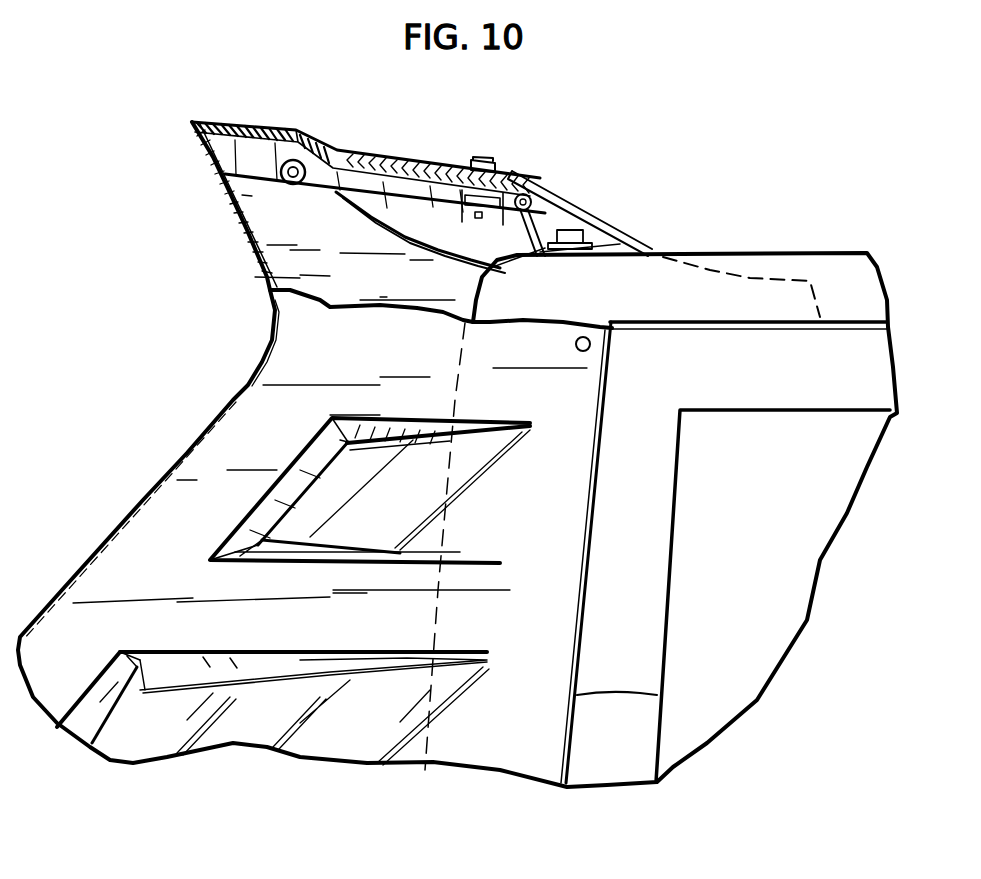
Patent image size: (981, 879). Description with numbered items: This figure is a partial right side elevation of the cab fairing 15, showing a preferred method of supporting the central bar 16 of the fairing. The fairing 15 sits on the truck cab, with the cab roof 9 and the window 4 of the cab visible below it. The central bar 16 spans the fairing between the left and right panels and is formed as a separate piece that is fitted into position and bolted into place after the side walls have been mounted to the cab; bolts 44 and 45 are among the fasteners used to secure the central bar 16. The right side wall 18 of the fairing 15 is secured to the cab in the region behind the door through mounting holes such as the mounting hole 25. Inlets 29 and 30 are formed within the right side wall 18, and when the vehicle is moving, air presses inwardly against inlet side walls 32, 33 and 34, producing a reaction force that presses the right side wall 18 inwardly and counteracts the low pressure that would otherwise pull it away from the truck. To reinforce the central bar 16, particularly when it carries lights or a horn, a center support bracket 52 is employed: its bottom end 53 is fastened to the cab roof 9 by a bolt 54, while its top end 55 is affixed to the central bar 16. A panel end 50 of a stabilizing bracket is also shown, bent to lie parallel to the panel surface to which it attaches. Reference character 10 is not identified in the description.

The window 4 is at (668, 615).
The cab roof 9 is at (750, 253).
The seam line 10 is at (657, 695).
The cab fairing 15 is at (605, 156).
The central bar 16 is at (427, 157).
The right side wall 18 is at (567, 543).
The mounting hole 25 is at (590, 346).
The inlet 29 is at (290, 460).
The inlet 30 is at (100, 678).
The inlet side wall 32 is at (367, 443).
The inlet side wall 33 is at (310, 537).
The inlet side wall 34 is at (230, 663).
The bolt 44 is at (287, 187).
The bolt 45 is at (557, 200).
The panel end 50 is at (490, 158).
The center support bracket 52 is at (530, 240).
The bottom end 53 is at (600, 247).
The bolt 54 is at (585, 225).
The top end 55 is at (457, 217).